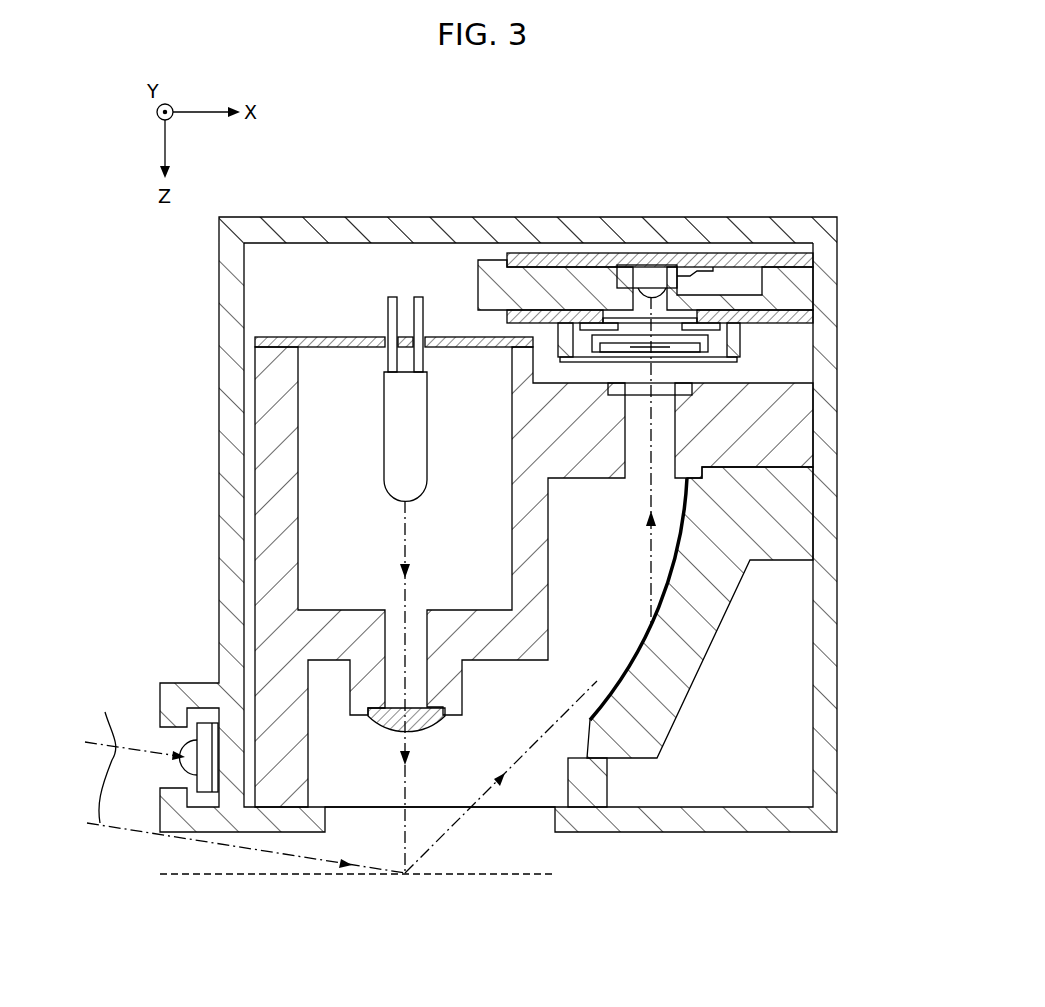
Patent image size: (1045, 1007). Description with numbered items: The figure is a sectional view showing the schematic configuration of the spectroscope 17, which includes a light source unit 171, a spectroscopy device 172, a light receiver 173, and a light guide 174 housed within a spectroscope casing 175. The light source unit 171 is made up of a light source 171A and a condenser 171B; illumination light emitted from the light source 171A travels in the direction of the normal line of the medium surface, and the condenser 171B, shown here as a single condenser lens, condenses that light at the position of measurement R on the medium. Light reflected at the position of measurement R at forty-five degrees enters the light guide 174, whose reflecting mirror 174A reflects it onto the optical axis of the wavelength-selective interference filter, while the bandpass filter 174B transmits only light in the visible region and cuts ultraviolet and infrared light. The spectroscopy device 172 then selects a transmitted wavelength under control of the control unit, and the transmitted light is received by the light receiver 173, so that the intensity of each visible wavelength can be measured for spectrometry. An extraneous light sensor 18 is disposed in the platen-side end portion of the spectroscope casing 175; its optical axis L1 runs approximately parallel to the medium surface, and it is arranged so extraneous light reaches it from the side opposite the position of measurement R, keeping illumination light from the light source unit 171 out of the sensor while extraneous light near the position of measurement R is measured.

The spectroscope 17 is at (746, 180).
The extraneous light sensor 18 is at (209, 727).
The light source unit 171 is at (291, 321).
The light source 171A is at (420, 485).
The condenser 171B is at (425, 731).
The spectroscopy device 172 is at (760, 350).
The light receiver 173 is at (712, 282).
The light guide 174 is at (618, 600).
The reflecting mirror 174A is at (664, 536).
The bandpass filter 174B is at (638, 397).
The spectroscope casing 175 is at (479, 217).
The optical axis of the extraneous light sensor L1 is at (245, 779).
The position of measurement R is at (402, 882).